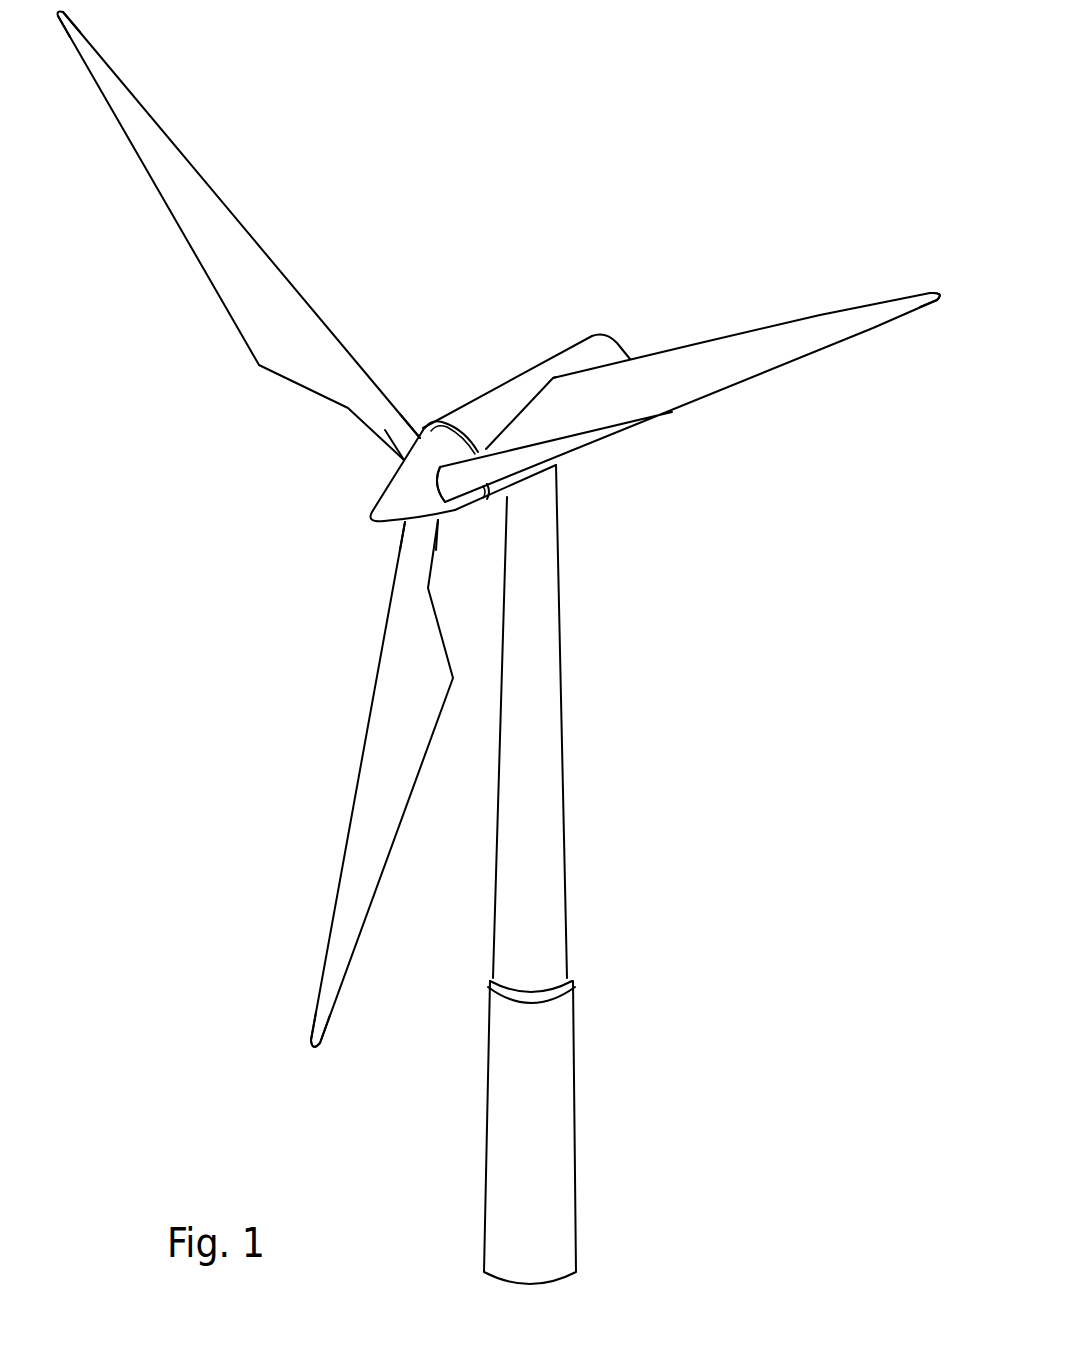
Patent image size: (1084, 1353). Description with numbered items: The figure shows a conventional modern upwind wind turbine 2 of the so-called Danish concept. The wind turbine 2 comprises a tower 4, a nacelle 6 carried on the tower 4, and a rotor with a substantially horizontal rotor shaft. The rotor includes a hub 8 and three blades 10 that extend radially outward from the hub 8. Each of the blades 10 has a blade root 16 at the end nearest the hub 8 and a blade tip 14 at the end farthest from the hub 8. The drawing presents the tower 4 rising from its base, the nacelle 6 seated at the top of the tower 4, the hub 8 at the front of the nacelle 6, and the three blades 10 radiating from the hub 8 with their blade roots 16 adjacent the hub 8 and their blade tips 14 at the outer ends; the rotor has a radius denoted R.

The wind turbine 2 is at (665, 808).
The tower 4 is at (548, 720).
The nacelle 6 is at (493, 403).
The hub 8 is at (390, 500).
The blades 10 is at (272, 333).
The blade tip 14 is at (105, 74).
The blade root 16 is at (396, 452).